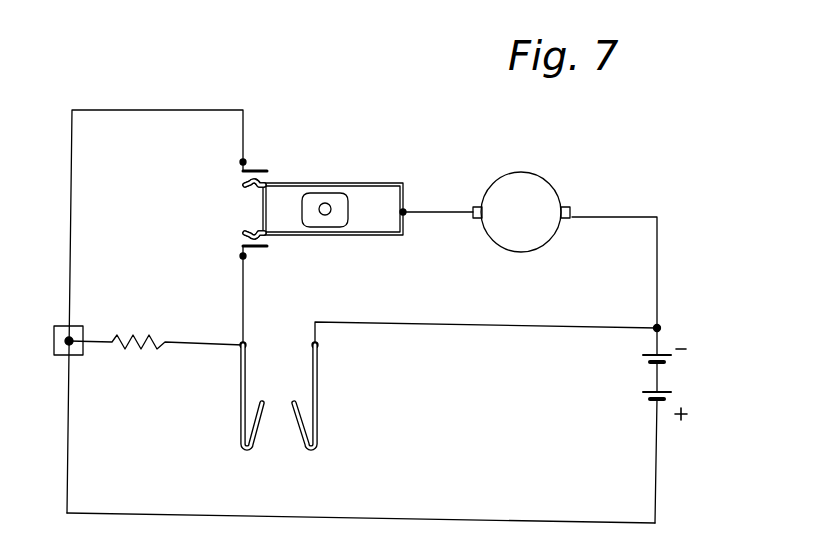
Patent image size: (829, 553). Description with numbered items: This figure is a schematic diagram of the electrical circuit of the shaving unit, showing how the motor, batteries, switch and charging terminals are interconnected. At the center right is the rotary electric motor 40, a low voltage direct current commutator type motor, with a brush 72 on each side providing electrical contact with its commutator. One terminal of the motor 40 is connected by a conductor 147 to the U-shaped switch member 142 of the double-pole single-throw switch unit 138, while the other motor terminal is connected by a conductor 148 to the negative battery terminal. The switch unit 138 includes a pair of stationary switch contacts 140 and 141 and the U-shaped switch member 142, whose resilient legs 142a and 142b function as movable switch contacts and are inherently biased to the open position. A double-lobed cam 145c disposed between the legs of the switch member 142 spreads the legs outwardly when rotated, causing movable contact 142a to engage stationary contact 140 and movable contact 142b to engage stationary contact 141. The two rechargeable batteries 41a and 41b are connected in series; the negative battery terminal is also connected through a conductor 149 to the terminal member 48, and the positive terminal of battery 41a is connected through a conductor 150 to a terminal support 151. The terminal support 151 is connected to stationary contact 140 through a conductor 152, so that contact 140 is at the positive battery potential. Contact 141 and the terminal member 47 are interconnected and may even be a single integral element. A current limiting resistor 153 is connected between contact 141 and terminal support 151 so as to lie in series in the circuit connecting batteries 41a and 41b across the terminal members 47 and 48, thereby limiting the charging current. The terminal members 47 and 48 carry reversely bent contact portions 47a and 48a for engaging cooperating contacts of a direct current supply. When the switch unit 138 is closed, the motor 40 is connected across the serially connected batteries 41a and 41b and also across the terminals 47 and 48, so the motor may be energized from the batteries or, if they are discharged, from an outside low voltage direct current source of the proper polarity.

The conductor 152 is at (130, 110).
The stationary switch contact 140 is at (236, 168).
The leg of U-shaped switch member 142a is at (244, 187).
The leg of U-shaped switch member 142b is at (244, 232).
The stationary switch contact 141 is at (240, 256).
The U-shaped switch member 142 is at (288, 183).
The double-pole single-throw switch unit 138 is at (346, 198).
The double-lobed cam 145c is at (342, 218).
The conductor 147 is at (425, 210).
The rotary electric motor 40 is at (520, 196).
The brush 72 is at (568, 208).
The conductor 148 is at (630, 217).
The conductor 149 is at (445, 326).
The conductor 150 is at (432, 519).
The terminal support 151 is at (80, 326).
The current limiting resistor 153 is at (136, 337).
The terminal member 47 is at (237, 396).
The reversely bent contact portion 47a is at (274, 378).
The terminal member 48 is at (305, 411).
The reversely bent contact portion 48a is at (288, 420).
The rechargeable battery 41b is at (672, 355).
The rechargeable battery 41a is at (672, 392).